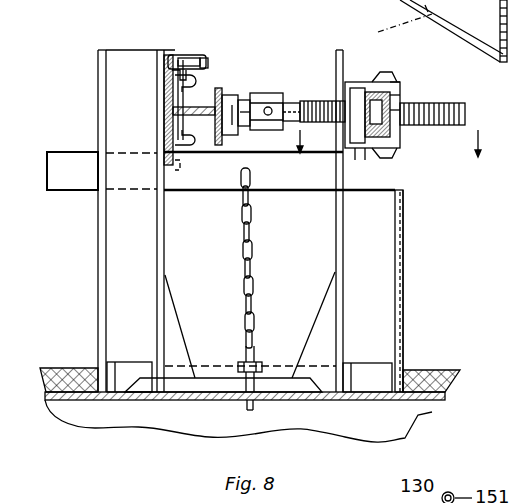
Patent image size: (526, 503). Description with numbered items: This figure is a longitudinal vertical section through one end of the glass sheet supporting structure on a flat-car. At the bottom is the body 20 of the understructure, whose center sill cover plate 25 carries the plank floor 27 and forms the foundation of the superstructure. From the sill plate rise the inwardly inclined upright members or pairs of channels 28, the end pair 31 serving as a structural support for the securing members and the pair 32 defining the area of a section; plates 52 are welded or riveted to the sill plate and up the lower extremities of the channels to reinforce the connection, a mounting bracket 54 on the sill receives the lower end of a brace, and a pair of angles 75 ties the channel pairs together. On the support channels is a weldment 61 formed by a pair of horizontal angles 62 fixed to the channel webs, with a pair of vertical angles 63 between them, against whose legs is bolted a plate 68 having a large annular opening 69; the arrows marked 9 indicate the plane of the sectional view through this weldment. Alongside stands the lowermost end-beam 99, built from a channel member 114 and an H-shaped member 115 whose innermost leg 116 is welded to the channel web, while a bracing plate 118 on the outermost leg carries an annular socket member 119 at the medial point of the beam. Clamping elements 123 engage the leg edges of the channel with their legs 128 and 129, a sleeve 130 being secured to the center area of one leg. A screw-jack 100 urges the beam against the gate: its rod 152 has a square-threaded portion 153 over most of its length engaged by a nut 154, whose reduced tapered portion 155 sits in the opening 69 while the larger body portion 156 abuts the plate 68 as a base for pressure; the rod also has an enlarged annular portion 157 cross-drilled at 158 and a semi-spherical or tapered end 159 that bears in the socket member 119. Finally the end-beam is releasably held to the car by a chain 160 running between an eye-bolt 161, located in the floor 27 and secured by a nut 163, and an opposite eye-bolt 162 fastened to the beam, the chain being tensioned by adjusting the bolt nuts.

The section line 9 is at (396, 145).
The body 20 is at (412, 428).
The center sill cover plate 25 is at (430, 398).
The floor 27 is at (412, 376).
The pairs of channels 28 is at (115, 230).
The pair of channels 31 is at (385, 300).
The pair of channels 32 is at (120, 277).
The plates 52 is at (405, 230).
The mounting bracket 54 is at (267, 378).
The weldment 61 is at (410, 86).
The angles 62 is at (395, 76).
The angles 63 is at (400, 98).
The plate 68 is at (370, 152).
The annular opening 69 is at (362, 150).
The pair of angles 75 is at (75, 165).
The end-beam 99 is at (202, 88).
The screw-jack 100 is at (292, 90).
The channel member 114 is at (165, 106).
The H-shaped member 115 is at (165, 116).
The leg 116 is at (162, 95).
The bracing plate 118 is at (222, 140).
The annular socket member 119 is at (246, 135).
The clamping elements 123 is at (200, 52).
The leg 128 is at (167, 55).
The leg 129 is at (165, 60).
The sleeve 130 is at (183, 53).
The rod 152 is at (300, 100).
The square-threaded portion 153 is at (466, 112).
The nut 154 is at (355, 82).
The reduced tapered portion 155 is at (400, 110).
The larger body portion 156 is at (362, 90).
The enlarged annular portion 157 is at (270, 93).
The cross-drilled hole 158 is at (288, 138).
The semi-spherical end 159 is at (270, 138).
The chain 160 is at (240, 255).
The eye-bolt 161 is at (248, 338).
The eye-bolt 162 is at (236, 140).
The nut 163 is at (242, 370).